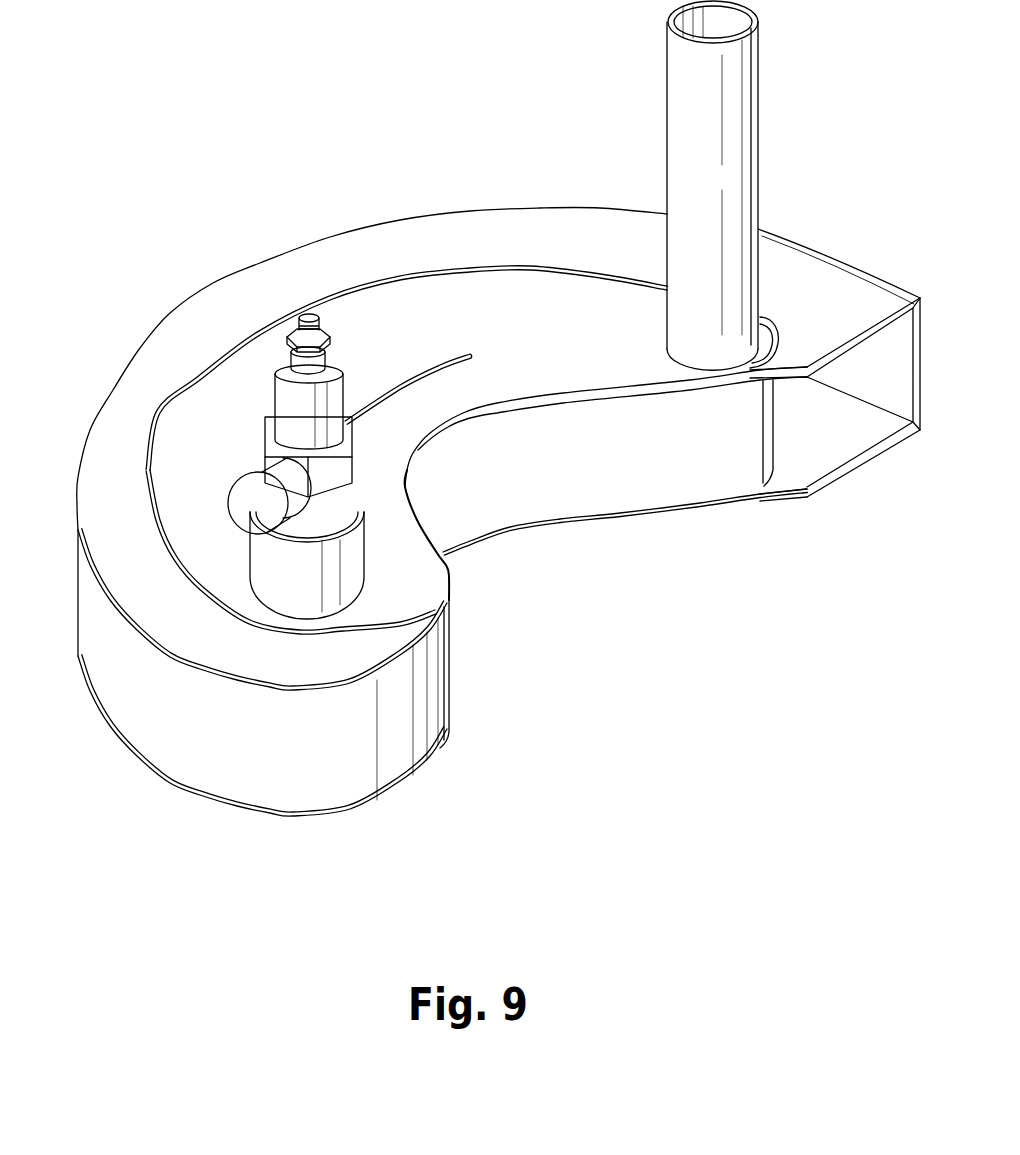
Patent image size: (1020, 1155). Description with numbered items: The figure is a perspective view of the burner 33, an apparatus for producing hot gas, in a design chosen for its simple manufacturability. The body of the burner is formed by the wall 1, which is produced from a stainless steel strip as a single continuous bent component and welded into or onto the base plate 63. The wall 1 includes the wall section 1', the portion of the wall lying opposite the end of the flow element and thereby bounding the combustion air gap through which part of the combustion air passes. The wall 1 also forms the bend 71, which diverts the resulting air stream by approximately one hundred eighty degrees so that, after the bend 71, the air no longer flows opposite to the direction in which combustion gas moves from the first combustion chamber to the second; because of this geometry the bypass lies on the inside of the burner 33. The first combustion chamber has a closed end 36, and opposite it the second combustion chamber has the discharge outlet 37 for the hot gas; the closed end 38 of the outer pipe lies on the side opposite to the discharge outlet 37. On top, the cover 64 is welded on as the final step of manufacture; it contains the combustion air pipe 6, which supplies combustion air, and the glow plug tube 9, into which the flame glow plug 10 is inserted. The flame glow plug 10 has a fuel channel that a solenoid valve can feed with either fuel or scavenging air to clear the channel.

The burner 33 is at (230, 264).
The wall 1 is at (476, 372).
The wall section 1' is at (485, 609).
The combustion air pipe 6 is at (747, 160).
The glow plug tube 9 is at (275, 560).
The flame glow plug 10 is at (290, 410).
The closed end 36 is at (315, 627).
The discharge outlet 37 is at (835, 417).
The closed end 38 is at (767, 443).
The base plate 63 is at (617, 517).
The cover 64 is at (533, 240).
The bend 71 is at (305, 750).